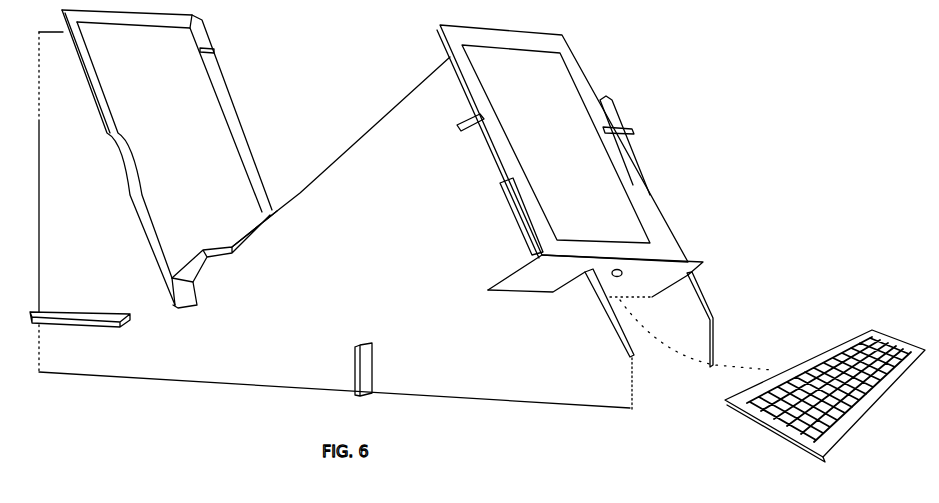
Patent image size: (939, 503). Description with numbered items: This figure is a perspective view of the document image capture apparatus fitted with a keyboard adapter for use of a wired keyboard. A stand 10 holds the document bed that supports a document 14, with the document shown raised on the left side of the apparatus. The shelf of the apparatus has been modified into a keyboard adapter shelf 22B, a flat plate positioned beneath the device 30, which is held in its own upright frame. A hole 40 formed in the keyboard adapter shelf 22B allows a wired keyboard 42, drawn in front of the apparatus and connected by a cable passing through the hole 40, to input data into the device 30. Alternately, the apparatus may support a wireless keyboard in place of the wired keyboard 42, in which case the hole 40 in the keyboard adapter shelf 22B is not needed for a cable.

The stand 10 is at (622, 374).
The document 14 is at (203, 107).
The keyboard adapter shelf 22B is at (697, 270).
The device 30 is at (615, 172).
The hole 40 is at (612, 288).
The wired keyboard 42 is at (763, 422).